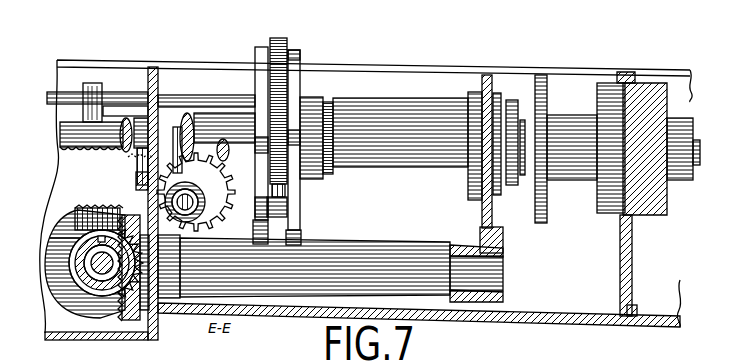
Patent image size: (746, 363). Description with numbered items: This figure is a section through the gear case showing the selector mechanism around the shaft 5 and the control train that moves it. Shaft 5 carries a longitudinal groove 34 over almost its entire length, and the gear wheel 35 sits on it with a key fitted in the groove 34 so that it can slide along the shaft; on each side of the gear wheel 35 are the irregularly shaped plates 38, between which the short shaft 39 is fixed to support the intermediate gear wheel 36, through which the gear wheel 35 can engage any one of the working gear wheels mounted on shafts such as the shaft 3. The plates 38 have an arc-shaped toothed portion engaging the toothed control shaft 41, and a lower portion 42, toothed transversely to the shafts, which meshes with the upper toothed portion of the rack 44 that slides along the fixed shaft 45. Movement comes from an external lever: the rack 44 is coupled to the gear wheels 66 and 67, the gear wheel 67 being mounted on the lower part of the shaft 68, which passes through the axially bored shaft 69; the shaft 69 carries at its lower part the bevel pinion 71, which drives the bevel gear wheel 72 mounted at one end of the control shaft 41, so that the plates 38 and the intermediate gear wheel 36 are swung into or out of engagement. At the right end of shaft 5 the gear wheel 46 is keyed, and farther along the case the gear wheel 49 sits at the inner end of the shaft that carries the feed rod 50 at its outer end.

The shaft 3 is at (133, 106).
The rack 44 is at (72, 153).
The fixed shaft 45 is at (212, 100).
The gear wheel 66 is at (134, 182).
The bevel pinion 71 is at (98, 208).
The axially bored shaft 69 is at (52, 243).
The gear wheel 67 is at (50, 263).
The shaft 68 is at (84, 280).
The bevel gear wheel 72 is at (128, 316).
The intermediate gear wheel 36 is at (272, 44).
The short shaft 39 is at (294, 50).
The gear wheel 35 is at (268, 187).
The plates 38 is at (254, 218).
The lower portion 42 is at (300, 239).
The shaft 5 is at (335, 167).
The longitudinal groove 34 is at (414, 145).
The toothed control shaft 41 is at (389, 250).
The gear wheel 46 is at (508, 197).
The gear wheel 49 is at (542, 224).
The feed rod 50 is at (697, 183).